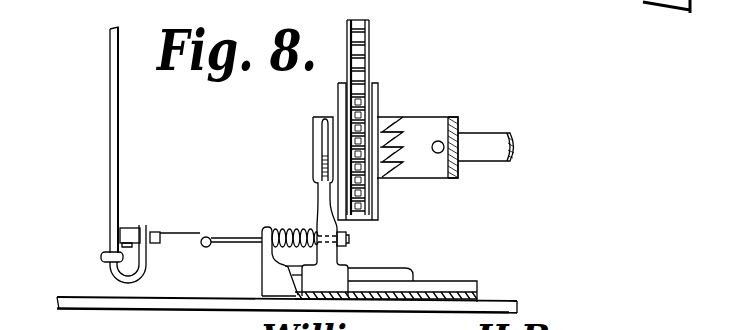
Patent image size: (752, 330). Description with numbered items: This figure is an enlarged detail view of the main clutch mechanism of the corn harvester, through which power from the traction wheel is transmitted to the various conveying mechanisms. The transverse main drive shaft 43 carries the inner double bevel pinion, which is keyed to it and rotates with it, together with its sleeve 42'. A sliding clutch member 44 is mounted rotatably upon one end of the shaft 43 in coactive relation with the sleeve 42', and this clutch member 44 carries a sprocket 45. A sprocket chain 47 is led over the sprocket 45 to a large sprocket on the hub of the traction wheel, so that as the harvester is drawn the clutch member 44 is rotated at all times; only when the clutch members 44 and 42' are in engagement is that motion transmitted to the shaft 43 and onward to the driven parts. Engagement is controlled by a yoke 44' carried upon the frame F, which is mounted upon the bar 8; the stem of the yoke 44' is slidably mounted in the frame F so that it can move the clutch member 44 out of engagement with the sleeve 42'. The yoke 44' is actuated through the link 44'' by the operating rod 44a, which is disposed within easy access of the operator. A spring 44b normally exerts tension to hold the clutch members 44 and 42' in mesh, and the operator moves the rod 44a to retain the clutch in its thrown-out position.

The bar 8 is at (119, 299).
The frame F is at (268, 272).
The sleeve 42' is at (490, 121).
The main drive shaft 43 is at (503, 134).
The sliding clutch member 44 is at (438, 114).
The yoke 44' is at (366, 206).
The link 44'' is at (191, 205).
The operating rod 44a is at (108, 135).
The spring 44b is at (282, 228).
The sprocket 45 is at (374, 83).
The sprocket chain 47 is at (370, 44).